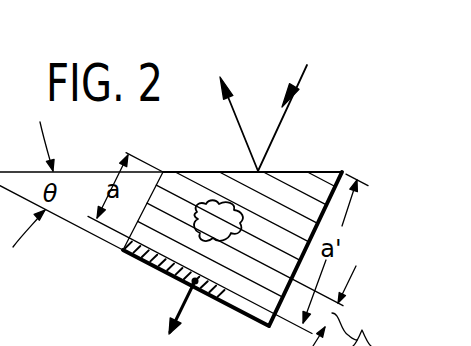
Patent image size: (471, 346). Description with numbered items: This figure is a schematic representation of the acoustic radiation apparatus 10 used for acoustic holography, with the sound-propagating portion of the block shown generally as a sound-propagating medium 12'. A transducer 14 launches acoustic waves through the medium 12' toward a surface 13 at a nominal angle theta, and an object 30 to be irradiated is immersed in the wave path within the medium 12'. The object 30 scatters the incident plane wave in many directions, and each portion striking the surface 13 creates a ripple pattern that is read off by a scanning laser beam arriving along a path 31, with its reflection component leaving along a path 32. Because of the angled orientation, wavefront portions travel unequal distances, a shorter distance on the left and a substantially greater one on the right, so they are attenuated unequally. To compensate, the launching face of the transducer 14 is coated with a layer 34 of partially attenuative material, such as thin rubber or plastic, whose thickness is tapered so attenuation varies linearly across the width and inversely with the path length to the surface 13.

The acoustic radiation apparatus 10 is at (360, 232).
The sound-propagating medium 12' is at (236, 203).
The surface 13 is at (300, 171).
The transducer 14 is at (224, 297).
The object 30 is at (246, 222).
The path 31 is at (281, 122).
The path 32 is at (240, 121).
The layer 34 is at (143, 258).